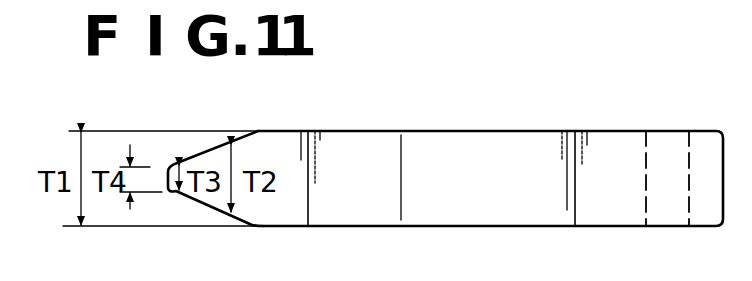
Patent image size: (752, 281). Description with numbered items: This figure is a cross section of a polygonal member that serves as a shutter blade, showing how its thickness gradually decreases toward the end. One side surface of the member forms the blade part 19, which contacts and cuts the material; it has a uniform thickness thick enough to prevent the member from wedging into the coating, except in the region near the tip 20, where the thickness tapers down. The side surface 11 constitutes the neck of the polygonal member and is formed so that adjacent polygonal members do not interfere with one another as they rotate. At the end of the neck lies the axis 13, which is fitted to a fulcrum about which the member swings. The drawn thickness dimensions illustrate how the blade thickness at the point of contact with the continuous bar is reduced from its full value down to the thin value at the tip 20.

The side surface 11 is at (501, 141).
The axis 13 is at (664, 130).
The blade part 19 is at (337, 142).
The tip 20 is at (166, 181).